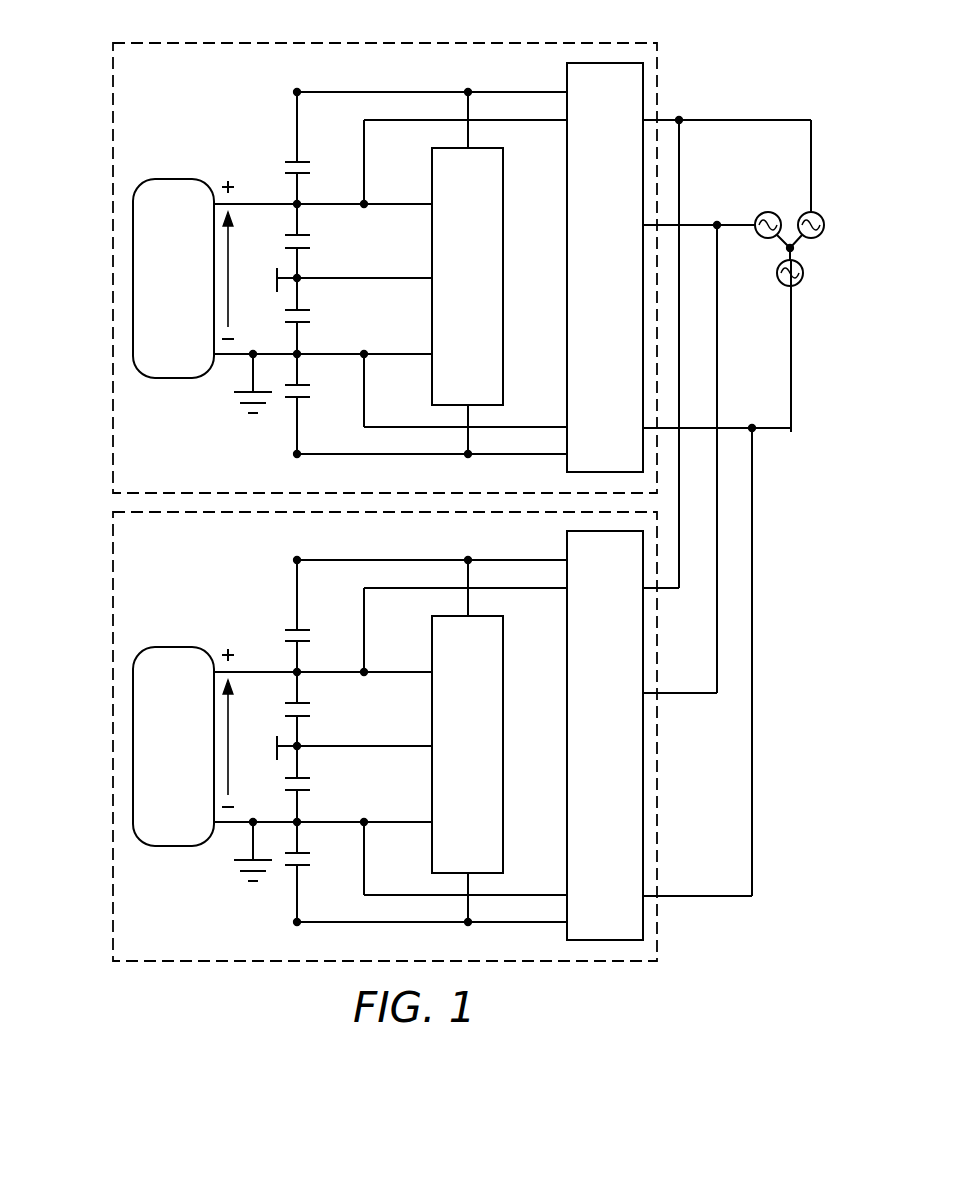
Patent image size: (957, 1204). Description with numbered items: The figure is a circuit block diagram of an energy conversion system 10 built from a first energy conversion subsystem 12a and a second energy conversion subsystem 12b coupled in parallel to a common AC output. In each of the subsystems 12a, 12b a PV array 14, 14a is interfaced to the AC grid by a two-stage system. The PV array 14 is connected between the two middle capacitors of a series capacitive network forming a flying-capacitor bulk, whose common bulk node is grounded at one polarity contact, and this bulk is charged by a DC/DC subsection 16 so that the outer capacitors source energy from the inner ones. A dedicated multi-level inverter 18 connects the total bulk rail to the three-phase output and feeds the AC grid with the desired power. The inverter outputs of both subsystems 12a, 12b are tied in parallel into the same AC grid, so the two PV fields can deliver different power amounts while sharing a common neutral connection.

The energy conversion system 10 is at (766, 60).
The first energy conversion subsystem 12a is at (112, 62).
The second energy conversion subsystem 12b is at (112, 530).
The PV array 14 is at (125, 512).
The battery 14a is at (146, 265).
The DC/DC subsection 16 is at (503, 279).
The multi-level inverter 18 is at (567, 294).